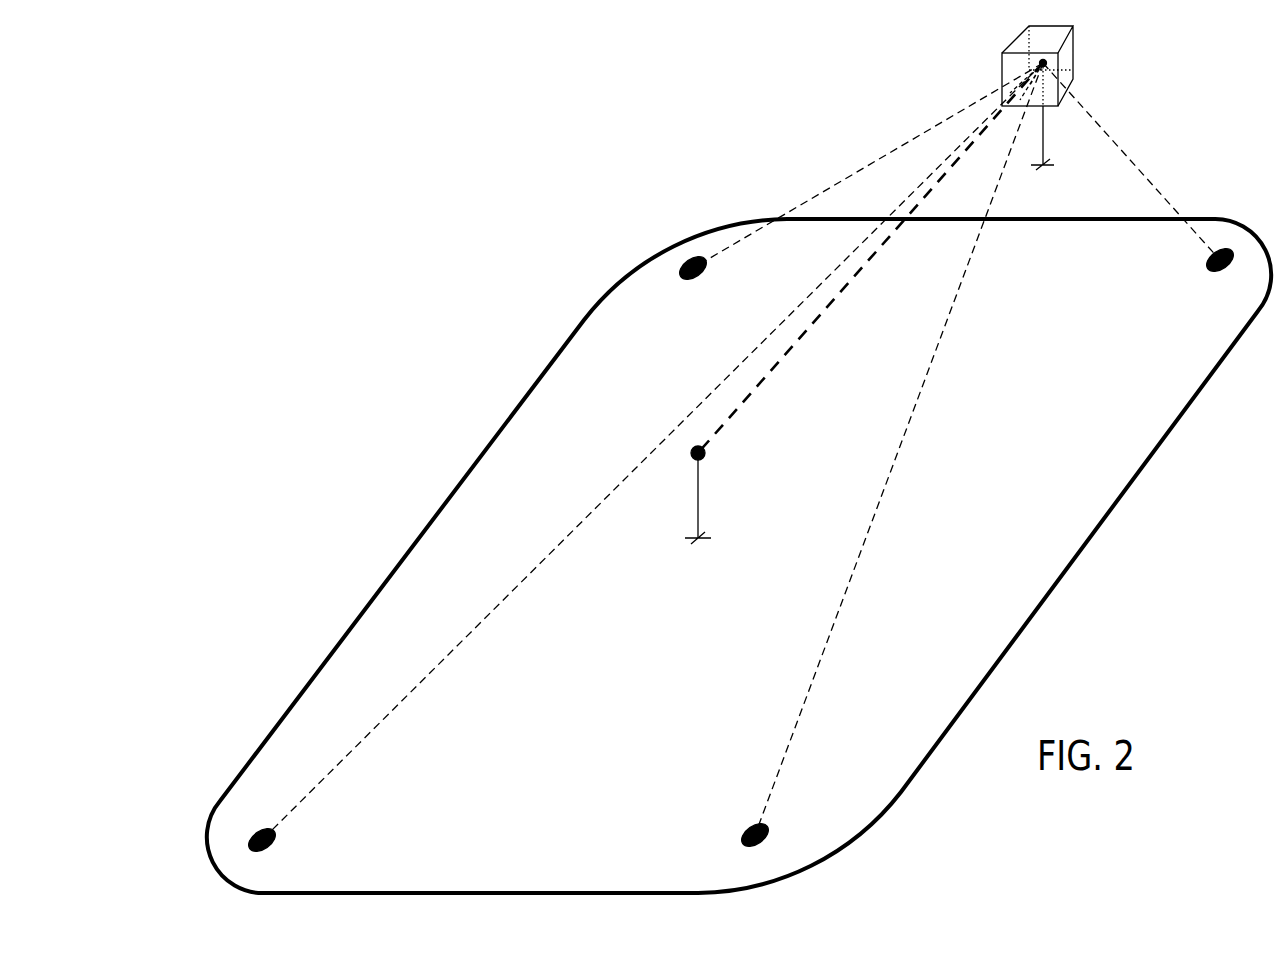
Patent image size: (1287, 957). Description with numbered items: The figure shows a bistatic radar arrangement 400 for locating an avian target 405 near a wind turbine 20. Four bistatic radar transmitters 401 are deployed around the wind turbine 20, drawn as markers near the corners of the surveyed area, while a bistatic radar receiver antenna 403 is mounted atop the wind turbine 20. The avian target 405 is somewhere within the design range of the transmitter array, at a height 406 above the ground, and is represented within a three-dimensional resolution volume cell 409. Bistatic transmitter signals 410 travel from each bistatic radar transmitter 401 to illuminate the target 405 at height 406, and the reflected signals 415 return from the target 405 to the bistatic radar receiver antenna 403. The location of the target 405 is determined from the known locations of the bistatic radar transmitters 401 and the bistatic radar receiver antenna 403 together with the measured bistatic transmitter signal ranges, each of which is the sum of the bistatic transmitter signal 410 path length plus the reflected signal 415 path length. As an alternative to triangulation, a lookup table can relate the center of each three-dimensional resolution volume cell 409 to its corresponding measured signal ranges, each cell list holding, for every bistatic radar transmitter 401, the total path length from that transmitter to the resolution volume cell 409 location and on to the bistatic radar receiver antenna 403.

The field / playing surface 400 is at (1105, 512).
The bistatic radar transmitter 401 is at (678, 260).
The bistatic radar receiver antenna 403 is at (692, 450).
The avian target 405 is at (1035, 62).
The height 406 is at (1043, 127).
The 3D resolution volume cell 409 is at (1070, 55).
The bistatic transmitter signal 410 is at (838, 180).
The reflected signal 415 is at (825, 310).
The wind turbine 20 is at (690, 508).